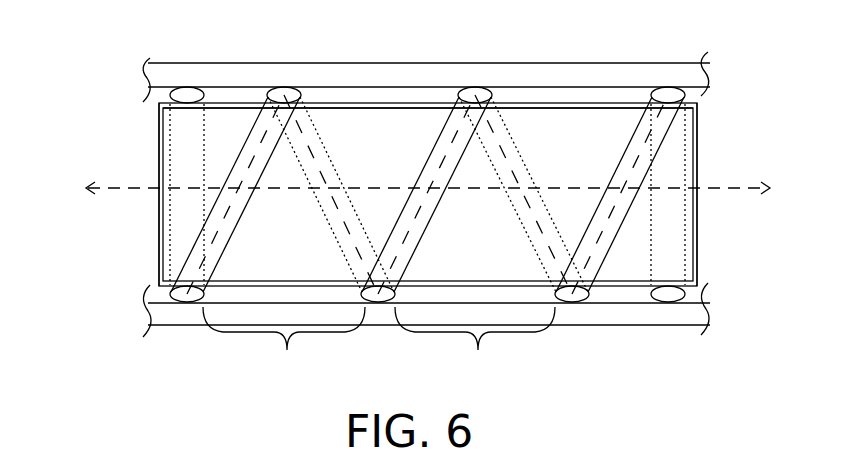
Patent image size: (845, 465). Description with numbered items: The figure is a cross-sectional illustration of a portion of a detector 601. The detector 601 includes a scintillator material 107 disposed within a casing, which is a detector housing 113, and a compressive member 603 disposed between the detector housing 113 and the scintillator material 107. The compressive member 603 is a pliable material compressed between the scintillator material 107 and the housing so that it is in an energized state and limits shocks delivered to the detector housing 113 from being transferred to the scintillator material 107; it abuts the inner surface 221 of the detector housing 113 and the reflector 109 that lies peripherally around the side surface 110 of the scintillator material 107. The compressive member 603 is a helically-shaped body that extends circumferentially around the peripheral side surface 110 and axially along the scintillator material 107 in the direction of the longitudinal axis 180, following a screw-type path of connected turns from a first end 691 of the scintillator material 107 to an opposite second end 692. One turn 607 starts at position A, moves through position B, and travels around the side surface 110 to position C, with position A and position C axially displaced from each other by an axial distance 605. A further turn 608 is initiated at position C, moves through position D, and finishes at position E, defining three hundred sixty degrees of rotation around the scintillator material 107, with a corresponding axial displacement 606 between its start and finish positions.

The detector 601 is at (424, 197).
The compressive member 603 is at (156, 71).
The first end 691 is at (112, 194).
The second end 692 is at (740, 194).
The longitudinal axis 180 is at (452, 210).
The detector housing 113 is at (426, 57).
The reflector 109 is at (428, 160).
The peripheral side surface 110 is at (428, 128).
The scintillator material 107 is at (571, 138).
The turn 607 is at (238, 194).
The turn 608 is at (429, 194).
The axial distance 605 is at (284, 344).
The second bay 606 is at (475, 344).
The inner surface 221 is at (426, 328).
The position A is at (197, 326).
The position B is at (292, 63).
The position C is at (387, 328).
The position D is at (489, 63).
The position E is at (582, 328).